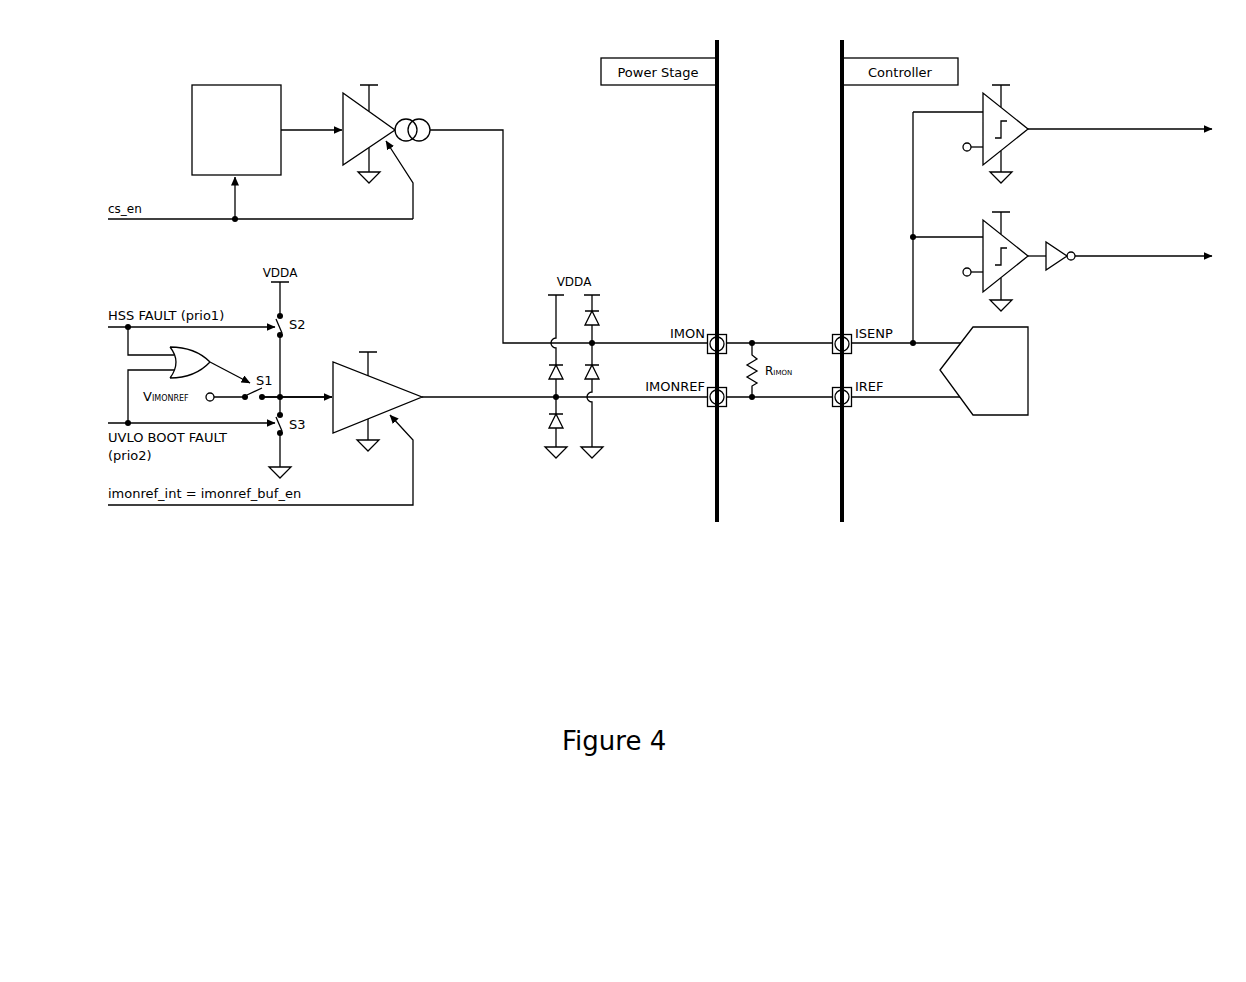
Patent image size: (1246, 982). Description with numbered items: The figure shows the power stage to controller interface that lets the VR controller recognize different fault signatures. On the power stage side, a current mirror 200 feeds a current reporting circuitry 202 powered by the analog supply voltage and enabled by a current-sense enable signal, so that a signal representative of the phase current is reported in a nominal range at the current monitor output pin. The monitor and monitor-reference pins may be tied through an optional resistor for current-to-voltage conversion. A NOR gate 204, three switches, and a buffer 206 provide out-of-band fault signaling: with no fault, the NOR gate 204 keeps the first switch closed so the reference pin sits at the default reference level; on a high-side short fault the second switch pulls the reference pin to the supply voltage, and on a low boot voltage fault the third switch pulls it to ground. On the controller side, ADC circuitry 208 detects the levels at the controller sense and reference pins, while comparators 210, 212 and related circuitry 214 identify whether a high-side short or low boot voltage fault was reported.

The current mirror 200 is at (236, 130).
The current reporting circuitry 202 is at (494, 206).
The NOR gate 204 is at (212, 356).
The buffer 206 is at (393, 381).
The ADC circuitry 208 is at (940, 371).
The comparator 210 is at (1020, 248).
The comparator 212 is at (1020, 121).
The related circuitry 214 is at (1059, 264).